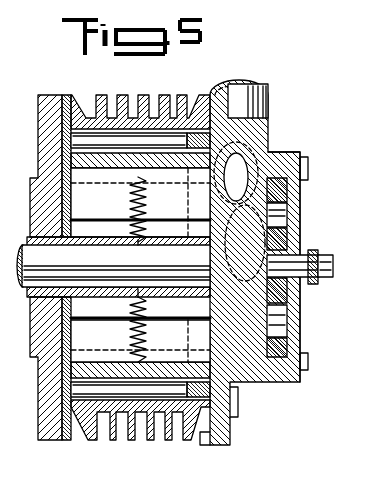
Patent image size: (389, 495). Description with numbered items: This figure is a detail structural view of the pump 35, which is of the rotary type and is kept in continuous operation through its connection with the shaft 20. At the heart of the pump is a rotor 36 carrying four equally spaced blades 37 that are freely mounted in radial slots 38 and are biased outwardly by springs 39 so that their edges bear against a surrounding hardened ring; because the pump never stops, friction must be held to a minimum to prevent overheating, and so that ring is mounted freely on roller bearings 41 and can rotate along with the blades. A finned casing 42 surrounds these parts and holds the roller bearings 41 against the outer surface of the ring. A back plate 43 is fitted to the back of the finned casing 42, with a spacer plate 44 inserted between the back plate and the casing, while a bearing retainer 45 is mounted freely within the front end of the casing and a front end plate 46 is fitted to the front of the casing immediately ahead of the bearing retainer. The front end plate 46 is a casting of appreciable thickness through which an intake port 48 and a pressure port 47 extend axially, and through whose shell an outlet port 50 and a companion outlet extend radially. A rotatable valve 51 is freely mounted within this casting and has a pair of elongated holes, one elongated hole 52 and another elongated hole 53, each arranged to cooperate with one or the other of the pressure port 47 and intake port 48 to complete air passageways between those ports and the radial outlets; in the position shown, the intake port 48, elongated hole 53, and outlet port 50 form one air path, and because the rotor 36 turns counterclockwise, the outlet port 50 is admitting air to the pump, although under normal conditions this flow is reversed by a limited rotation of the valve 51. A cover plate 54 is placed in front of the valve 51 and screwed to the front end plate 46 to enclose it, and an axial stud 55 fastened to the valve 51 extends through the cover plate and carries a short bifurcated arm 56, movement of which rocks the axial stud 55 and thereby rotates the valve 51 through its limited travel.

The shaft 20 is at (26, 289).
The pump 35 is at (254, 247).
The rotor 36 is at (110, 253).
The blades 37 is at (158, 328).
The radial slots 38 is at (103, 308).
The springs 39 is at (137, 242).
The roller bearings 41 is at (163, 133).
The finned casing 42 is at (146, 95).
The back plate 43 is at (48, 97).
The spacer plate 44 is at (67, 97).
The bearing retainer 45 is at (197, 408).
The front end plate 46 is at (266, 128).
The pressure port 47 is at (196, 337).
The intake port 48 is at (157, 247).
The outlet port 50 is at (290, 302).
The rotatable valve 51 is at (297, 250).
The elongated hole 52 is at (290, 322).
The elongated hole 53 is at (298, 216).
The cover plate 54 is at (283, 160).
The axial stud 55 is at (330, 258).
The bifurcated arm 56 is at (318, 286).